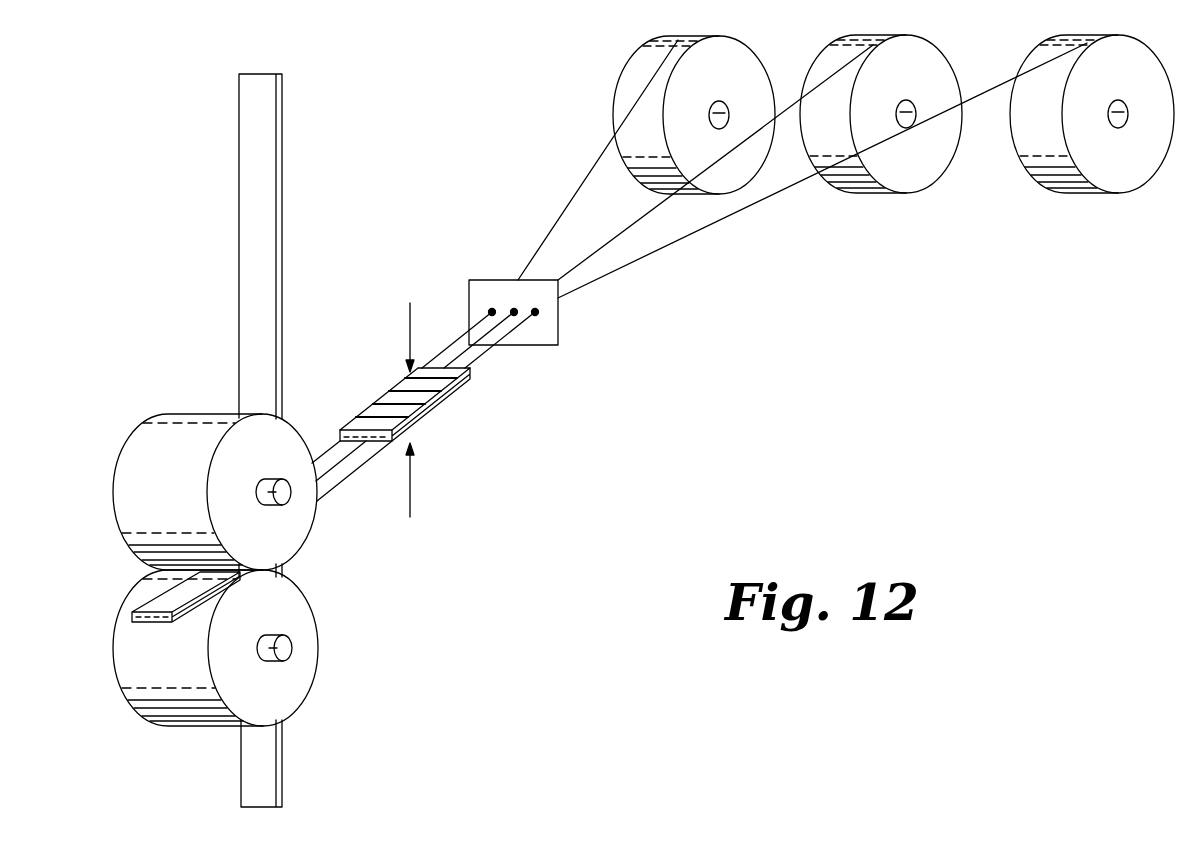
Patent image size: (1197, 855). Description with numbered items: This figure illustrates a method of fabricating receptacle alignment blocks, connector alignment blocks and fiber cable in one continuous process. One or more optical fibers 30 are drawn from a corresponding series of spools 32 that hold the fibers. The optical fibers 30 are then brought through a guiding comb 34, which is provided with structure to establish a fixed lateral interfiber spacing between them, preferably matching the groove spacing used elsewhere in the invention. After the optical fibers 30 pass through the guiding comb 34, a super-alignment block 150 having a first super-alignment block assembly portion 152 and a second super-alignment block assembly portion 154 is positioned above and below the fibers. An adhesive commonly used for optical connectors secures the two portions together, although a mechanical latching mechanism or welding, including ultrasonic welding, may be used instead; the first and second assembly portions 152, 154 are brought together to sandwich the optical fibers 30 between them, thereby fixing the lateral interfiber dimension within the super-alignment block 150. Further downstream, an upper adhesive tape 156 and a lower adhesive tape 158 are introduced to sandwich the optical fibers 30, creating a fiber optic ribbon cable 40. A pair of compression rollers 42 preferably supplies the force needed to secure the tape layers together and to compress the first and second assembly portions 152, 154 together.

The optical fibers 30 is at (610, 241).
The spools 32 is at (1022, 66).
The guiding comb 34 is at (530, 338).
The fiber optic ribbon cable 40 is at (162, 598).
The compression rollers 42 is at (128, 440).
The super-alignment block 150 is at (446, 410).
The first super-alignment block assembly portion 152 is at (392, 389).
The second super-alignment block assembly portion 154 is at (428, 420).
The upper adhesive tape 156 is at (250, 164).
The lower adhesive tape 158 is at (253, 782).